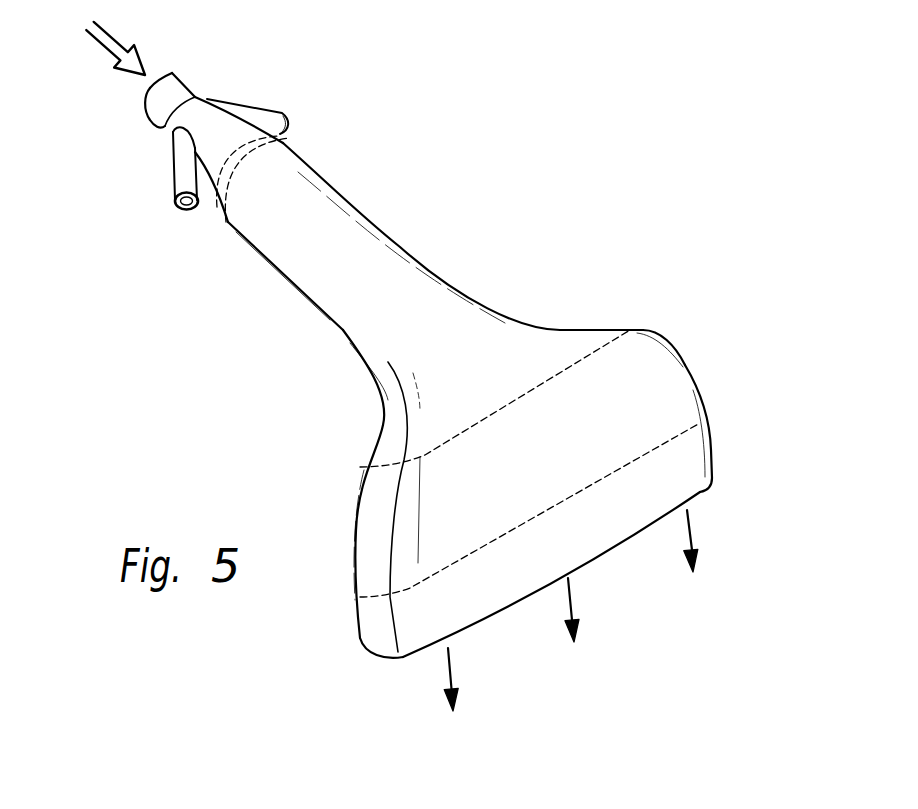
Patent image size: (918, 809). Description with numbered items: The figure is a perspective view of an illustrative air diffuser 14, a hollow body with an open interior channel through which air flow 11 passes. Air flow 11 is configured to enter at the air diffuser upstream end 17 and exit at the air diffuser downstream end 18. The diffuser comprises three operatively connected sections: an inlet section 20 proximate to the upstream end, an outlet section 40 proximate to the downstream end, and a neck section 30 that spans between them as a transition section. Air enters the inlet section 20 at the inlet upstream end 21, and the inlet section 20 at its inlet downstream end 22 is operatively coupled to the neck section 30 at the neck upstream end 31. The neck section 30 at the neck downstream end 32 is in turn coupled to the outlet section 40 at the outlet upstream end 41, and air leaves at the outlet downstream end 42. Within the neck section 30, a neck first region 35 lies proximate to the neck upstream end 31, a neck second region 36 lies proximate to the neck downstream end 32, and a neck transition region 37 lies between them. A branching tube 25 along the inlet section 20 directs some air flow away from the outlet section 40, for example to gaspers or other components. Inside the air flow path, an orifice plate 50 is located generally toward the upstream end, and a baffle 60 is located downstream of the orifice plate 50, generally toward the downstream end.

The air flow 11 is at (110, 58).
The air diffuser 14 is at (613, 190).
The air diffuser upstream end 17 is at (145, 105).
The air diffuser downstream end 18 is at (360, 617).
The inlet section 20 is at (212, 97).
The inlet upstream end 21 is at (185, 77).
The inlet downstream end 22 is at (284, 112).
The branching tube 25 is at (172, 177).
The neck section 30 is at (433, 273).
The neck upstream end 31 is at (308, 155).
The neck downstream end 32 is at (583, 330).
The neck first region 35 is at (287, 280).
The neck second region 36 is at (377, 448).
The neck transition region 37 is at (372, 377).
The outlet section 40 is at (713, 448).
The outlet upstream end 41 is at (707, 397).
The outlet downstream end 42 is at (715, 465).
The orifice plate 50 is at (293, 131).
The baffle 60 is at (662, 330).